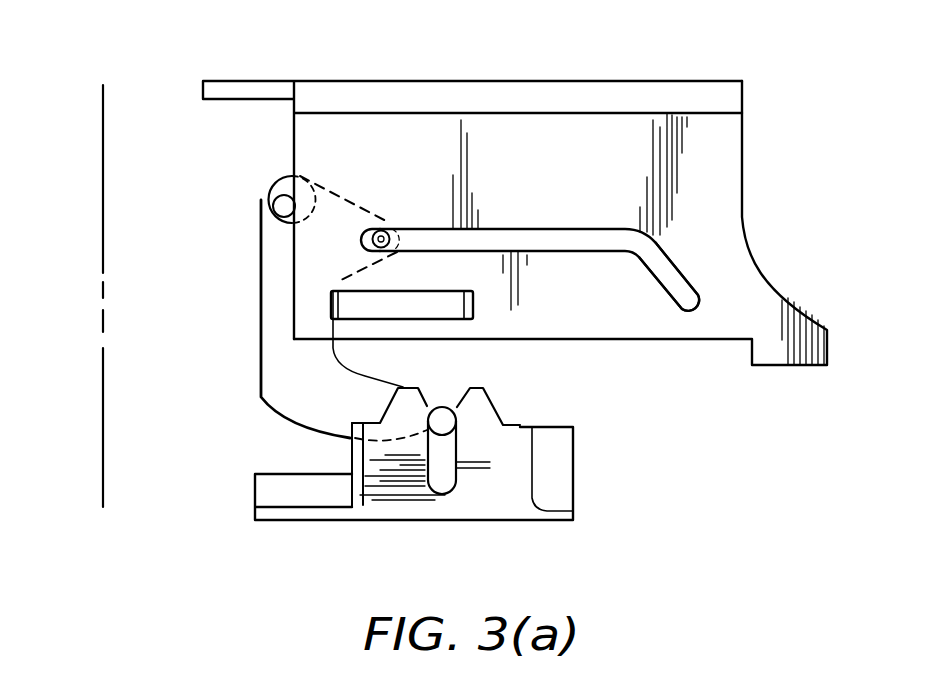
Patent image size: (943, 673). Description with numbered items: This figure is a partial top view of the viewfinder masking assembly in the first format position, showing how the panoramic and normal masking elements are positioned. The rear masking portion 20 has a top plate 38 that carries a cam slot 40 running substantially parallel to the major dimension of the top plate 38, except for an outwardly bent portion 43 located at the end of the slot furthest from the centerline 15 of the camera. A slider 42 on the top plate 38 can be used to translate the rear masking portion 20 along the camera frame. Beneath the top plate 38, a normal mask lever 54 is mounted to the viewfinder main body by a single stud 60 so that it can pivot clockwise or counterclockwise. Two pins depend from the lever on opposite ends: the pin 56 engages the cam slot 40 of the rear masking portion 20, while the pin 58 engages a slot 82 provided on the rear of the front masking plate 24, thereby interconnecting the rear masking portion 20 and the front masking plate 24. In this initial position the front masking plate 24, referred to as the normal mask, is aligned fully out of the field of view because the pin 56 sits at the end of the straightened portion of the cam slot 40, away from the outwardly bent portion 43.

The centerline 15 is at (103, 200).
The rear masking portion 20 is at (682, 81).
The front masking plate 24 is at (257, 490).
The top plate 38 is at (680, 175).
The cam slot 40 is at (587, 245).
The slider 42 is at (473, 308).
The outwardly bent portion 43 is at (677, 272).
The normal mask lever 54 is at (273, 263).
The pin 56 is at (385, 225).
The pin 58 is at (433, 420).
The stud 60 is at (293, 206).
The slot 82 is at (447, 478).